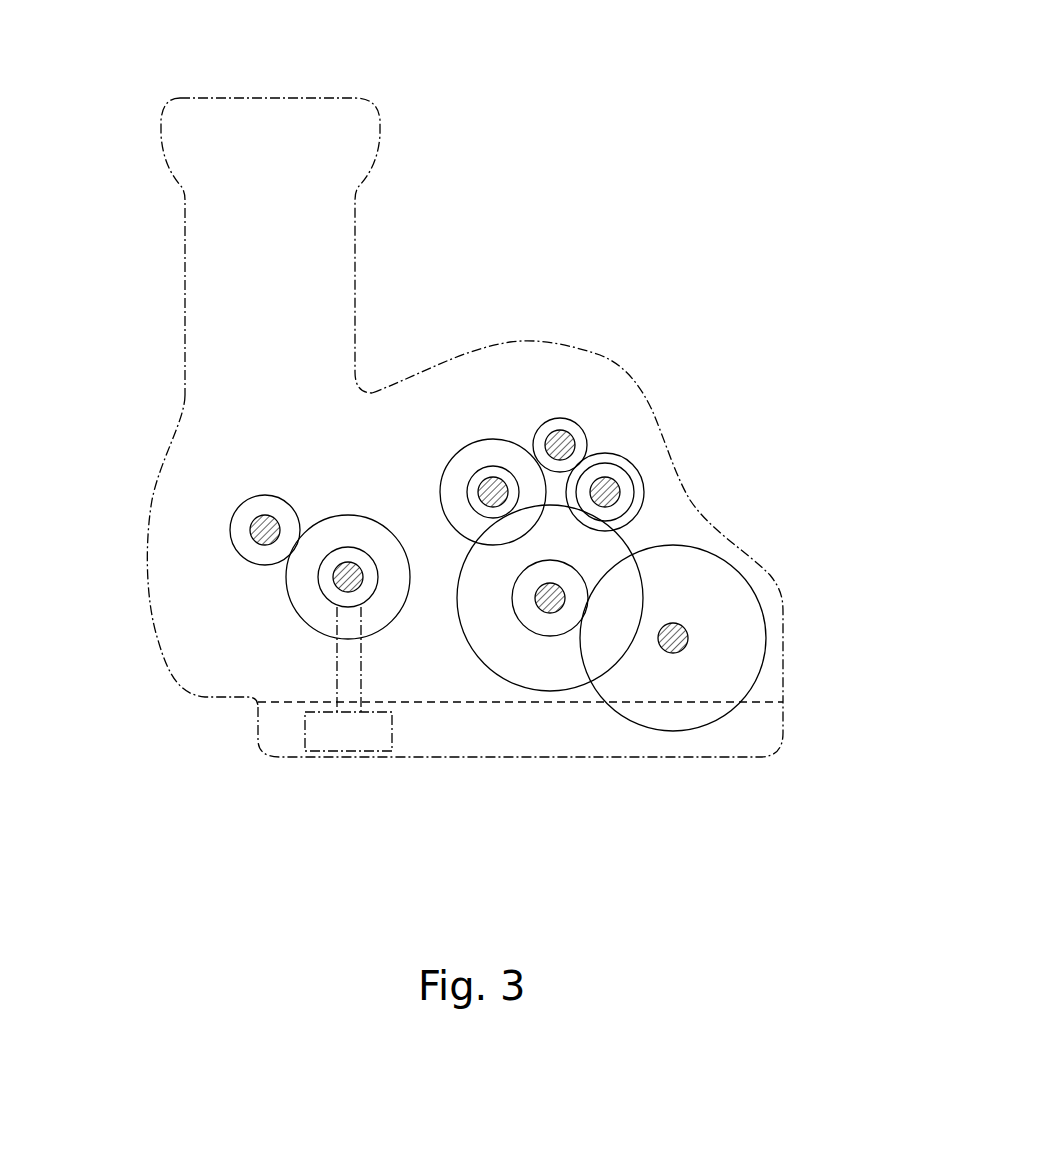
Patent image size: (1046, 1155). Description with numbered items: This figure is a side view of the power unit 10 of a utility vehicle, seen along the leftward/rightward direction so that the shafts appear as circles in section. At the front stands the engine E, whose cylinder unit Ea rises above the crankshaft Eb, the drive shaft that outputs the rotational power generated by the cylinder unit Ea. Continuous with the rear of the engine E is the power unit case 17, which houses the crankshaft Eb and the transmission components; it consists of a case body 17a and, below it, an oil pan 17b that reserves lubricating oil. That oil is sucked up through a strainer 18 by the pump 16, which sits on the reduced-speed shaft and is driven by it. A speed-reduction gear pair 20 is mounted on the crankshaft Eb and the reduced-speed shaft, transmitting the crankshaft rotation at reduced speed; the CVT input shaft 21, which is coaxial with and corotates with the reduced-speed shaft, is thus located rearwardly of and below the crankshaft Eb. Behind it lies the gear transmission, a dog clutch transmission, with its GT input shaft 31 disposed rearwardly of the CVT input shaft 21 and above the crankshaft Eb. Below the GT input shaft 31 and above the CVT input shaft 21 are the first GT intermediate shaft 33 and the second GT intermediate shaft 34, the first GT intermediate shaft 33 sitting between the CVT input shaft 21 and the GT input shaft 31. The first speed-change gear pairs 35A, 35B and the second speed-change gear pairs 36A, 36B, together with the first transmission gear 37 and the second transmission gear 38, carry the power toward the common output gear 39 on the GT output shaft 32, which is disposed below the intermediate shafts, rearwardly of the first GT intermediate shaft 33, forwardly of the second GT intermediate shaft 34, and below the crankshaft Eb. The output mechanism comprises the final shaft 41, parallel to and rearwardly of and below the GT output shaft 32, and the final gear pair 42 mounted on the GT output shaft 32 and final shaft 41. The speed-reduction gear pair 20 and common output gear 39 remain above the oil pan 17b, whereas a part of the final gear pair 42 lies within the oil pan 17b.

The engine E is at (222, 197).
The cylinder unit Ea is at (185, 271).
The crankshaft Eb is at (268, 515).
The power unit 10 is at (542, 436).
The pump 16 is at (353, 548).
The power unit case 17 is at (542, 551).
The case body 17a is at (785, 650).
The oil pan 17b is at (570, 729).
The strainer 18 is at (348, 745).
The speed-reduction gear pair 20 is at (313, 567).
The CVT input shaft 21 is at (335, 590).
The GT input shaft 31 is at (560, 418).
The GT output shaft 32 is at (553, 613).
The first GT intermediate shaft 33 is at (480, 483).
The second GT intermediate shaft 34 is at (620, 484).
The first speed-change gear pair 35A is at (462, 401).
The first speed-change gear pair 35B is at (462, 401).
The second speed-change gear pair 36A is at (680, 407).
The second speed-change gear pair 36B is at (680, 407).
The first transmission gear 37 is at (443, 517).
The second transmission gear 38 is at (643, 512).
The common output gear 39 is at (523, 675).
The final shaft 41 is at (678, 650).
The final gear pair 42 is at (673, 695).